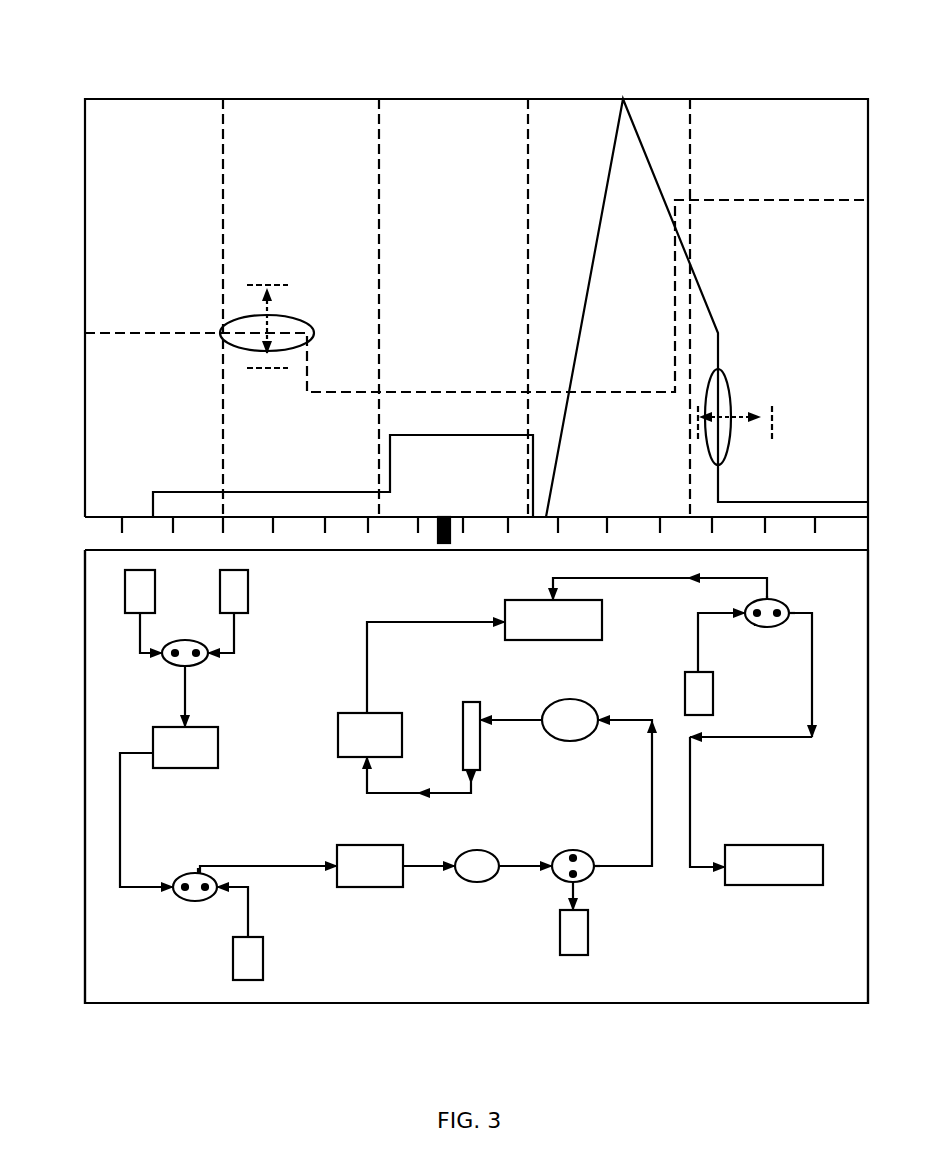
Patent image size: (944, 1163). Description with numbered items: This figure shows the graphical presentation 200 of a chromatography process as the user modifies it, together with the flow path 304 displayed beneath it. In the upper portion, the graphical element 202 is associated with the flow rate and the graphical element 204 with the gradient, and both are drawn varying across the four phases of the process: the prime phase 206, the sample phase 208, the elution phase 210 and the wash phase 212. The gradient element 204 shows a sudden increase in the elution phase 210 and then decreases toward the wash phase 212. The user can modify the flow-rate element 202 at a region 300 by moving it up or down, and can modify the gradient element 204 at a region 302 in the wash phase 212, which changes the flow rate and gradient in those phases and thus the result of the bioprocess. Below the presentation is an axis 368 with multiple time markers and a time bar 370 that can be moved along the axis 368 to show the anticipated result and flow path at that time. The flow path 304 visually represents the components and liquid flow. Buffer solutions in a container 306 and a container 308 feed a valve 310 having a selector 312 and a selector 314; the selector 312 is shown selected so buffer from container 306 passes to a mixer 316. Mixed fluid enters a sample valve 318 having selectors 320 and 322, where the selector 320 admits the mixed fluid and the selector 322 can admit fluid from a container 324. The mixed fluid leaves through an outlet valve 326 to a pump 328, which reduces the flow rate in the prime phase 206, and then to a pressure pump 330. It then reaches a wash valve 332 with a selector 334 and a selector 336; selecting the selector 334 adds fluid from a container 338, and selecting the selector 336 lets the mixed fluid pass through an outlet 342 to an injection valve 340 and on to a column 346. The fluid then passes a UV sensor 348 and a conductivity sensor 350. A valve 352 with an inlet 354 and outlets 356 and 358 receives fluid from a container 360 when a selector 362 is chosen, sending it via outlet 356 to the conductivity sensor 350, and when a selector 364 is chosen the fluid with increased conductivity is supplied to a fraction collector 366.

The graphical presentation 200 is at (325, 45).
The graphical element 202 is at (288, 333).
The graphical element 204 is at (718, 362).
The prime phase 206 is at (271, 308).
The sample phase 208 is at (426, 308).
The elution phase 210 is at (573, 308).
The wash phase 212 is at (741, 308).
The region 300 is at (227, 322).
The region 302 is at (731, 400).
The flow path 304 is at (102, 585).
The container 306 is at (145, 598).
The container 308 is at (238, 598).
The valve 310 is at (183, 642).
The selector 312 is at (173, 655).
The selector 314 is at (198, 656).
The mixer 316 is at (208, 747).
The sample valve 318 is at (188, 897).
The selector 320 is at (185, 880).
The selector 322 is at (210, 868).
The container 324 is at (263, 955).
The outlet valve 326 is at (198, 868).
The pump 328 is at (360, 863).
The pressure pump 330 is at (473, 865).
The wash valve 332 is at (583, 853).
The selector 334 is at (563, 872).
The selector 336 is at (570, 853).
The container 338 is at (578, 933).
The injection valve 340 is at (575, 730).
The outlet 342 is at (592, 870).
The column 346 is at (473, 712).
The UV sensor 348 is at (421, 689).
The conductivity sensor 350 is at (553, 620).
The valve 352 is at (777, 612).
The inlet 354 is at (750, 622).
The outlet 356 is at (768, 600).
The outlet 358 is at (790, 616).
The container 360 is at (693, 692).
The selector 362 is at (757, 612).
The selector 364 is at (777, 626).
The fraction collector 366 is at (774, 865).
The axis 368 is at (102, 538).
The time bar 370 is at (444, 545).